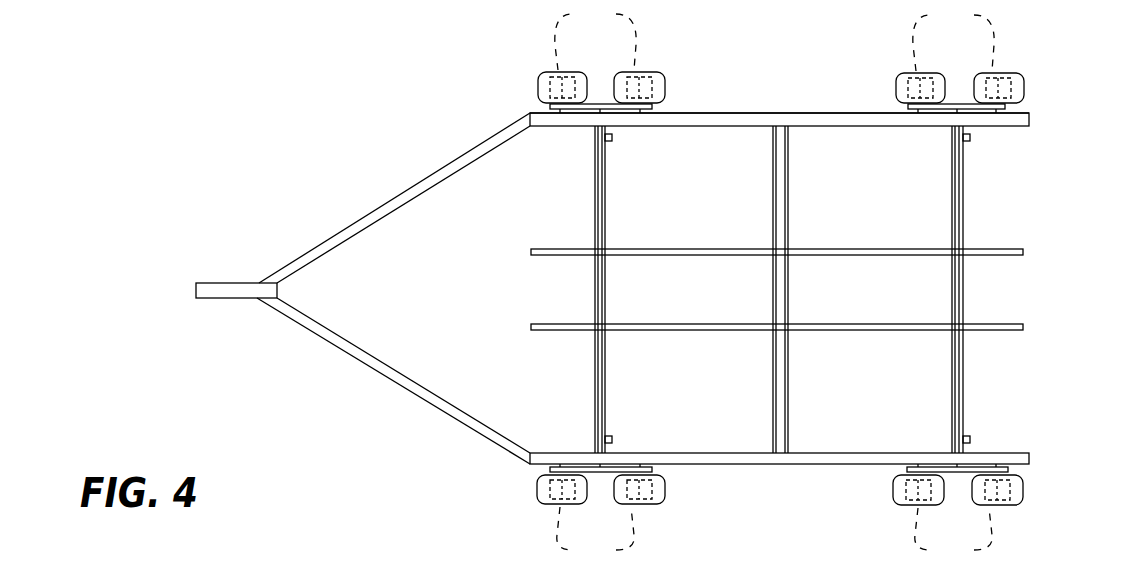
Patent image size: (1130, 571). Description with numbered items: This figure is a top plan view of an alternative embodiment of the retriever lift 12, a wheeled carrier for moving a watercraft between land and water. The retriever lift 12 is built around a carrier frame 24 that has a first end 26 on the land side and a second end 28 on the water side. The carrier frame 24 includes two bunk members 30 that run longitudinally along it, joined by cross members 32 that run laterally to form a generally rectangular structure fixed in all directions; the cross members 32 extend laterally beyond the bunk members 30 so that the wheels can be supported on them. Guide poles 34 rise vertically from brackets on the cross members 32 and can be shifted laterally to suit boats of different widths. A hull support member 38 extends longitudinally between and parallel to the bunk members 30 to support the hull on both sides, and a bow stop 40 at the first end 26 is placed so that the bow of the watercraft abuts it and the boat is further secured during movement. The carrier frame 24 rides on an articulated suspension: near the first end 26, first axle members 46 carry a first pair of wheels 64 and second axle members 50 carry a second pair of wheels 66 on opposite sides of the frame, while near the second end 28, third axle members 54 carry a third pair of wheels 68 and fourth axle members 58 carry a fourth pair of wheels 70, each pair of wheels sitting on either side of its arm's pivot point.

The retriever lift 12 is at (348, 118).
The carrier frame 24 is at (789, 396).
The first end 26 is at (402, 388).
The second end 28 is at (1029, 121).
The bunk members 30 is at (754, 113).
The cross members 32 is at (603, 192).
The guide poles 34 is at (612, 438).
The hull support member 38 is at (720, 255).
The bow stop 40 is at (272, 289).
The first axle members 46 is at (601, 521).
The second axle members 50 is at (601, 52).
The third axle members 54 is at (958, 521).
The fourth axle members 58 is at (960, 53).
The first pair of wheels 64 is at (614, 490).
The second pair of wheels 66 is at (614, 88).
The third pair of wheels 68 is at (972, 490).
The fourth pair of wheels 70 is at (974, 90).